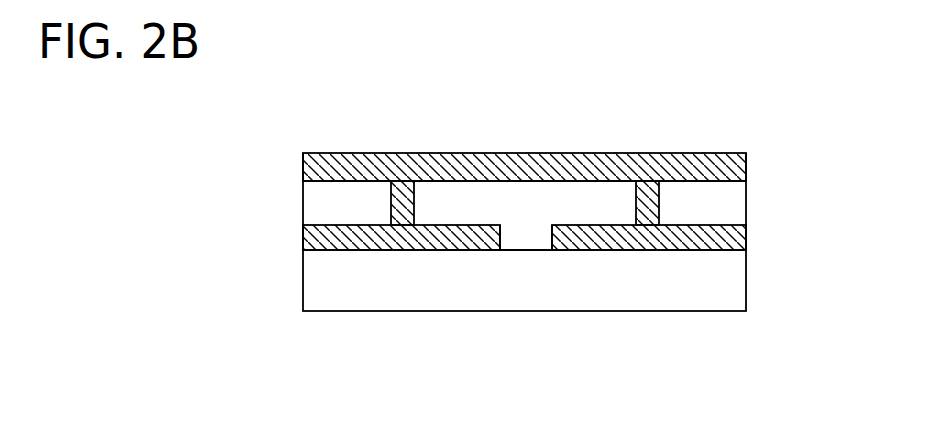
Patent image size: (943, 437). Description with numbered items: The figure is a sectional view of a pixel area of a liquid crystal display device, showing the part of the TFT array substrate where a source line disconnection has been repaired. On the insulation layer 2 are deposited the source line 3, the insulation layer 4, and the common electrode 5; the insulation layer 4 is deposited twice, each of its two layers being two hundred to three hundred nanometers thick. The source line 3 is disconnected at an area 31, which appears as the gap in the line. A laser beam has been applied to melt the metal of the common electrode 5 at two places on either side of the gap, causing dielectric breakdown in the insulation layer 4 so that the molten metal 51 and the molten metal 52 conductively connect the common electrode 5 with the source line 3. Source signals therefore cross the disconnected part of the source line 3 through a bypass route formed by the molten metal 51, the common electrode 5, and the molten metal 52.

The insulation layer 2 is at (320, 279).
The source line 3 is at (745, 234).
The disconnected area 31 is at (526, 245).
The insulation layer 4 is at (316, 212).
The common electrode 5 is at (745, 168).
The molten metal 51 is at (403, 207).
The molten metal 52 is at (647, 200).